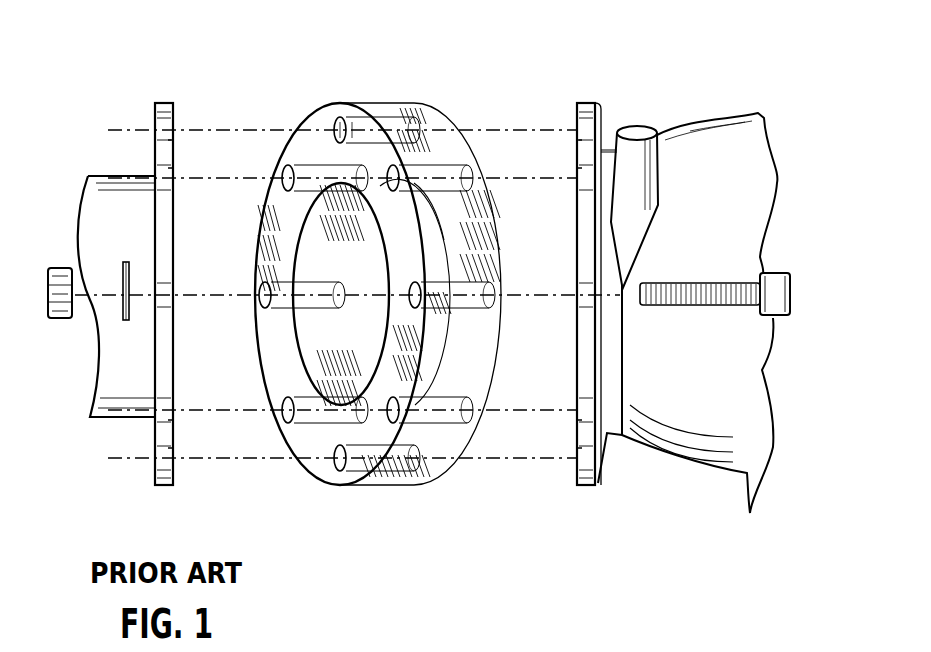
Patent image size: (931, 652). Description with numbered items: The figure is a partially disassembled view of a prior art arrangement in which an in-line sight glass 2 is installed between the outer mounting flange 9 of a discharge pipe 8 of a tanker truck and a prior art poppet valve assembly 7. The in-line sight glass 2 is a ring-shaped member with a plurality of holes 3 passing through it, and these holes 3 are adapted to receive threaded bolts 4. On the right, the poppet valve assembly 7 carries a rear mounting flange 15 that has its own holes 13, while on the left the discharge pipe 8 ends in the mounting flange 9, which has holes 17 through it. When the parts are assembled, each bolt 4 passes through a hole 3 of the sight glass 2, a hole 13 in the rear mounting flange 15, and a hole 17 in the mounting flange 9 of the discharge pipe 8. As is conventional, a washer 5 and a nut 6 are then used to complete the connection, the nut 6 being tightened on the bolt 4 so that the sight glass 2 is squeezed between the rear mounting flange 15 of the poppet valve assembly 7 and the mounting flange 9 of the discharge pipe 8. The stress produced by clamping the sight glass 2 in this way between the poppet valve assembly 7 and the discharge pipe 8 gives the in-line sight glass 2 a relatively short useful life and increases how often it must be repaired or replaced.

The in-line sight glass 2 is at (371, 496).
The holes 3 is at (278, 163).
The threaded bolts 4 is at (792, 292).
The washer 5 is at (127, 262).
The nut 6 is at (52, 275).
The poppet valve assembly 7 is at (735, 383).
The discharge pipe 8 is at (135, 367).
The mounting flange 9 is at (165, 103).
The holes 13 is at (576, 168).
The rear mounting flange 15 is at (588, 103).
The holes 17 is at (174, 168).